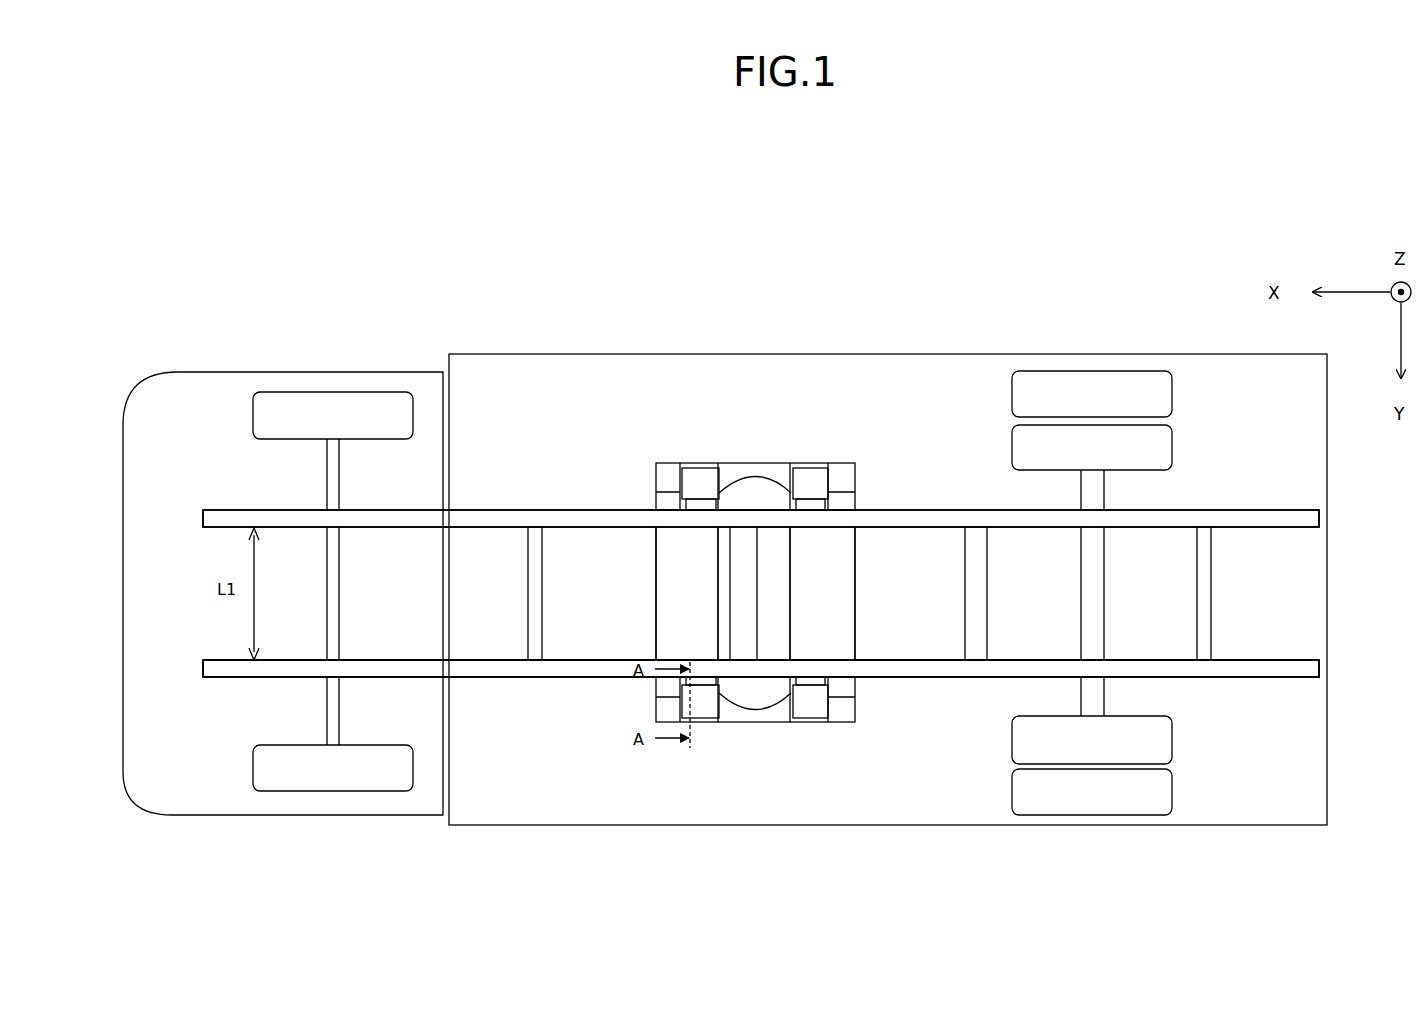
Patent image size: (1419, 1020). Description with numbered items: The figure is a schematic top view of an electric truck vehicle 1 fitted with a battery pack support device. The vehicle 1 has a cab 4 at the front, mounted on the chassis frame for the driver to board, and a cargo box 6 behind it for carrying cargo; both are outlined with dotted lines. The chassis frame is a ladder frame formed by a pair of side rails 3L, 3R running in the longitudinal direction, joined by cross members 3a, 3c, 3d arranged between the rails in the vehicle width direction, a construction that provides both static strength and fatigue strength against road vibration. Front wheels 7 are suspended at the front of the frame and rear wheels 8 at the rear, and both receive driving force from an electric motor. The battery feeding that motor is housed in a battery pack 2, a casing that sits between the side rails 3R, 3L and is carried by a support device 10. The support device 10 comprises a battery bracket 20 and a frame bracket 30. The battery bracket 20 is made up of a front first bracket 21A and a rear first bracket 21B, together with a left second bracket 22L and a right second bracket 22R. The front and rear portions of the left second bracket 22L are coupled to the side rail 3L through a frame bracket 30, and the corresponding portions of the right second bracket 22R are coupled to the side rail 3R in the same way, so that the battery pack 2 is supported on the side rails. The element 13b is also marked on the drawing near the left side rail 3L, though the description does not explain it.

The vehicle 1 is at (1116, 263).
The battery pack 2 is at (776, 568).
The right side rail 3R is at (1283, 528).
The left side rail 3L is at (1283, 678).
The cross member 3a is at (525, 597).
The cross member 3c is at (990, 538).
The cross member 3d is at (1212, 607).
The cab 4 is at (258, 363).
The cargo box 6 is at (653, 353).
The front wheels 7 is at (340, 792).
The rear wheels 8 is at (1090, 816).
The support device 10 is at (860, 418).
The cross member portion 13b is at (761, 685).
The battery bracket 20 is at (633, 483).
The front first bracket 21A is at (655, 590).
The rear first bracket 21B is at (857, 625).
The right second bracket 22R is at (747, 465).
The left second bracket 22L is at (751, 722).
The frame bracket 30 is at (697, 465).